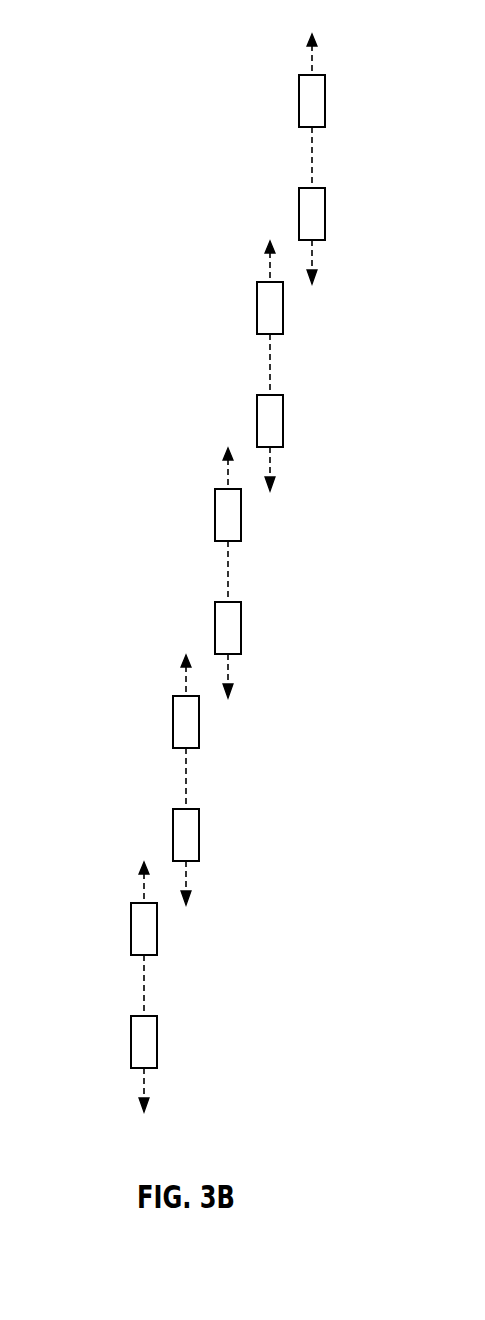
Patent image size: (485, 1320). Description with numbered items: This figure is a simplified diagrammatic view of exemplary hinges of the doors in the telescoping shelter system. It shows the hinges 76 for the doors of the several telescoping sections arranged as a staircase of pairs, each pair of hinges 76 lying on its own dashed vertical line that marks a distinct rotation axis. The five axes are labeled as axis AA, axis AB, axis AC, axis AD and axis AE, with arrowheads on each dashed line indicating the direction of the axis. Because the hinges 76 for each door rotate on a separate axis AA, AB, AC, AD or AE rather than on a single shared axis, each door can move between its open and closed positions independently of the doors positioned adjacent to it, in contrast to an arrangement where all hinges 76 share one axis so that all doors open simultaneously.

The hinge 76 is at (131, 928).
The axis AA is at (144, 1086).
The axis AB is at (186, 879).
The axis AC is at (228, 672).
The axis AD is at (270, 465).
The axis AE is at (312, 258).